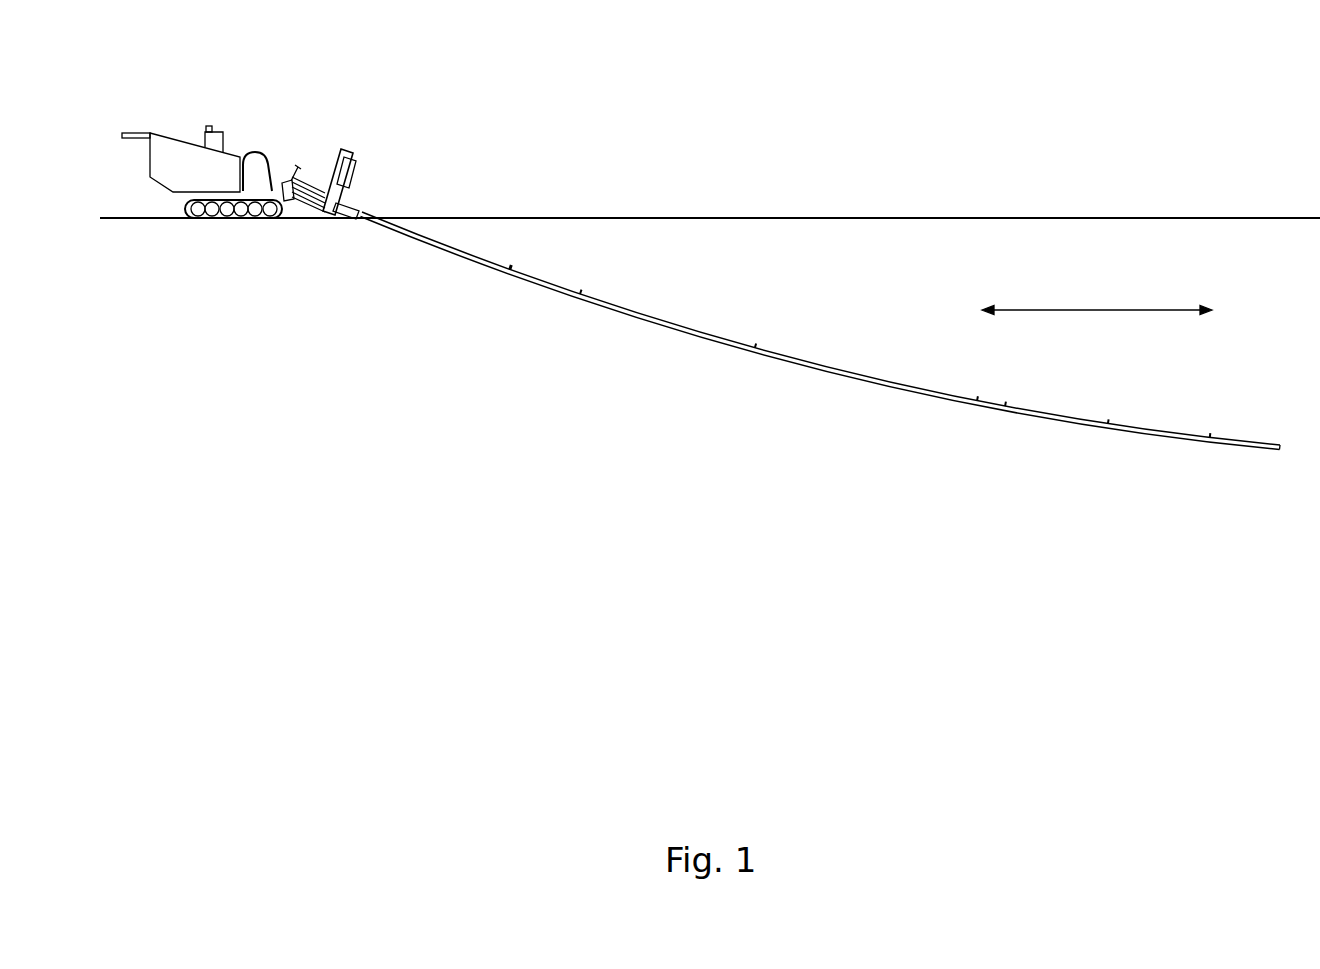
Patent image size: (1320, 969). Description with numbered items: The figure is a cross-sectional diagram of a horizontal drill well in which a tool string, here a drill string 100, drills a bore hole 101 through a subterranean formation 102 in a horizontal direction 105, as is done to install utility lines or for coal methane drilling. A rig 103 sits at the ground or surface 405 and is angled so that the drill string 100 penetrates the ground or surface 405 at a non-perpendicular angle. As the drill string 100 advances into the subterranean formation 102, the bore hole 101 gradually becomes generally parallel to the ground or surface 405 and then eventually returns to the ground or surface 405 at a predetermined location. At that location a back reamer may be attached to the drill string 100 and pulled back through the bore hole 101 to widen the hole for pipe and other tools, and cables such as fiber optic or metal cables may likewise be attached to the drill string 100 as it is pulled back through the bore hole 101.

The drill string 100 is at (573, 300).
The bore hole 101 is at (511, 264).
The subterranean formation 102 is at (304, 388).
The rig 103 is at (176, 147).
The horizontal direction 105 is at (1068, 310).
The ground or surface 405 is at (899, 218).